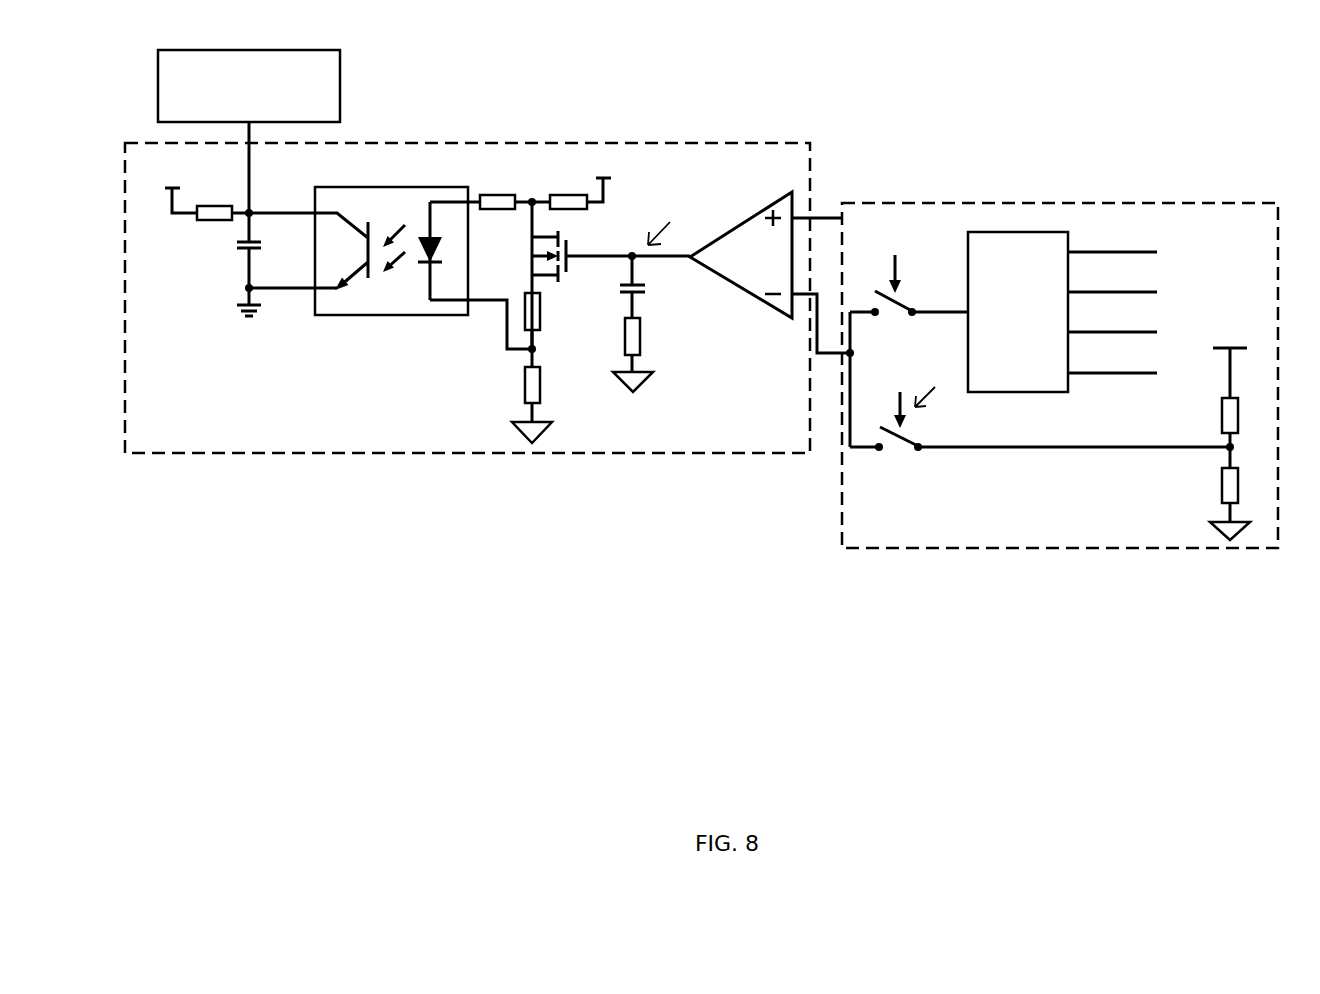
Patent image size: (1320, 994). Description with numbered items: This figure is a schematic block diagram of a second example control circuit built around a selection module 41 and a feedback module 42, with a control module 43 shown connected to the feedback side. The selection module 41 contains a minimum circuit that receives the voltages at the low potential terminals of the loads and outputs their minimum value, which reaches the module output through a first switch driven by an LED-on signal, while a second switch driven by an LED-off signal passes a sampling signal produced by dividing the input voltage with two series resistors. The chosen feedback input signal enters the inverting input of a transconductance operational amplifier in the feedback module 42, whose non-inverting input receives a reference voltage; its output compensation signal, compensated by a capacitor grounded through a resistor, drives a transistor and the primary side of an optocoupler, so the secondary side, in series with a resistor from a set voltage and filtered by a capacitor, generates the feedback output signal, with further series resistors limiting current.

The selection module 41 is at (1045, 203).
The feedback module 42 is at (602, 142).
The control module 43 is at (247, 50).